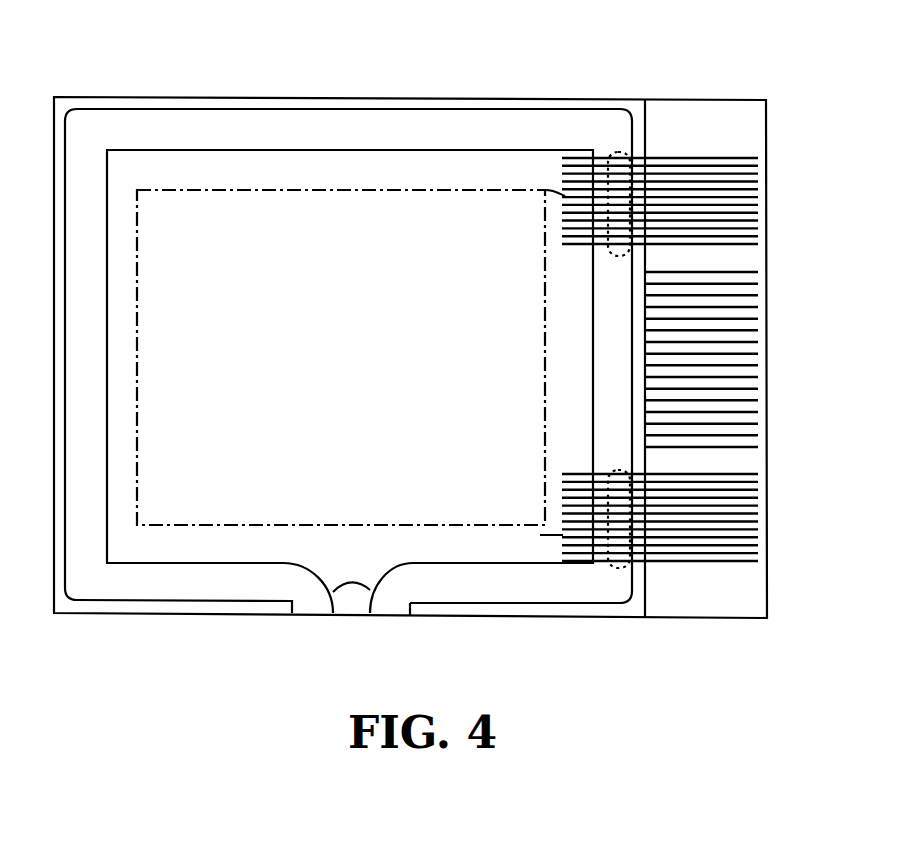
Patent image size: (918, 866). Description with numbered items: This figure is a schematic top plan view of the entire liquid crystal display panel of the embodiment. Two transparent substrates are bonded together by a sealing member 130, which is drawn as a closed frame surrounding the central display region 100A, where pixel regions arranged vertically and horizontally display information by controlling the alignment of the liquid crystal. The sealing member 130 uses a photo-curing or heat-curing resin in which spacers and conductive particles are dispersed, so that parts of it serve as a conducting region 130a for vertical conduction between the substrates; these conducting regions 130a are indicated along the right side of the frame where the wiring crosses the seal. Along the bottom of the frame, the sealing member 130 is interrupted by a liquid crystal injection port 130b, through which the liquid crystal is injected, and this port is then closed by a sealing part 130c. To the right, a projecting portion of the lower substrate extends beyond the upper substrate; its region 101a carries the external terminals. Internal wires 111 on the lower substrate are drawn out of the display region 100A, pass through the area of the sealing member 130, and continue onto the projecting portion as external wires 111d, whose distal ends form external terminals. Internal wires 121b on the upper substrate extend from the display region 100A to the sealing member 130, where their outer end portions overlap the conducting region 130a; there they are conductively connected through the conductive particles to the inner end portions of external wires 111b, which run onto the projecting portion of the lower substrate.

The display region 100A is at (352, 190).
The pad region of lower substrate 101a is at (673, 122).
The internal wires 111 is at (710, 155).
The external wires 111b is at (705, 563).
The external wires 111d is at (650, 368).
The internal wires 121b is at (545, 190).
The sealing member 130 is at (218, 127).
The conducting region 130a is at (613, 248).
The liquid crystal injection port 130b is at (342, 586).
The sealing part 130c is at (350, 617).